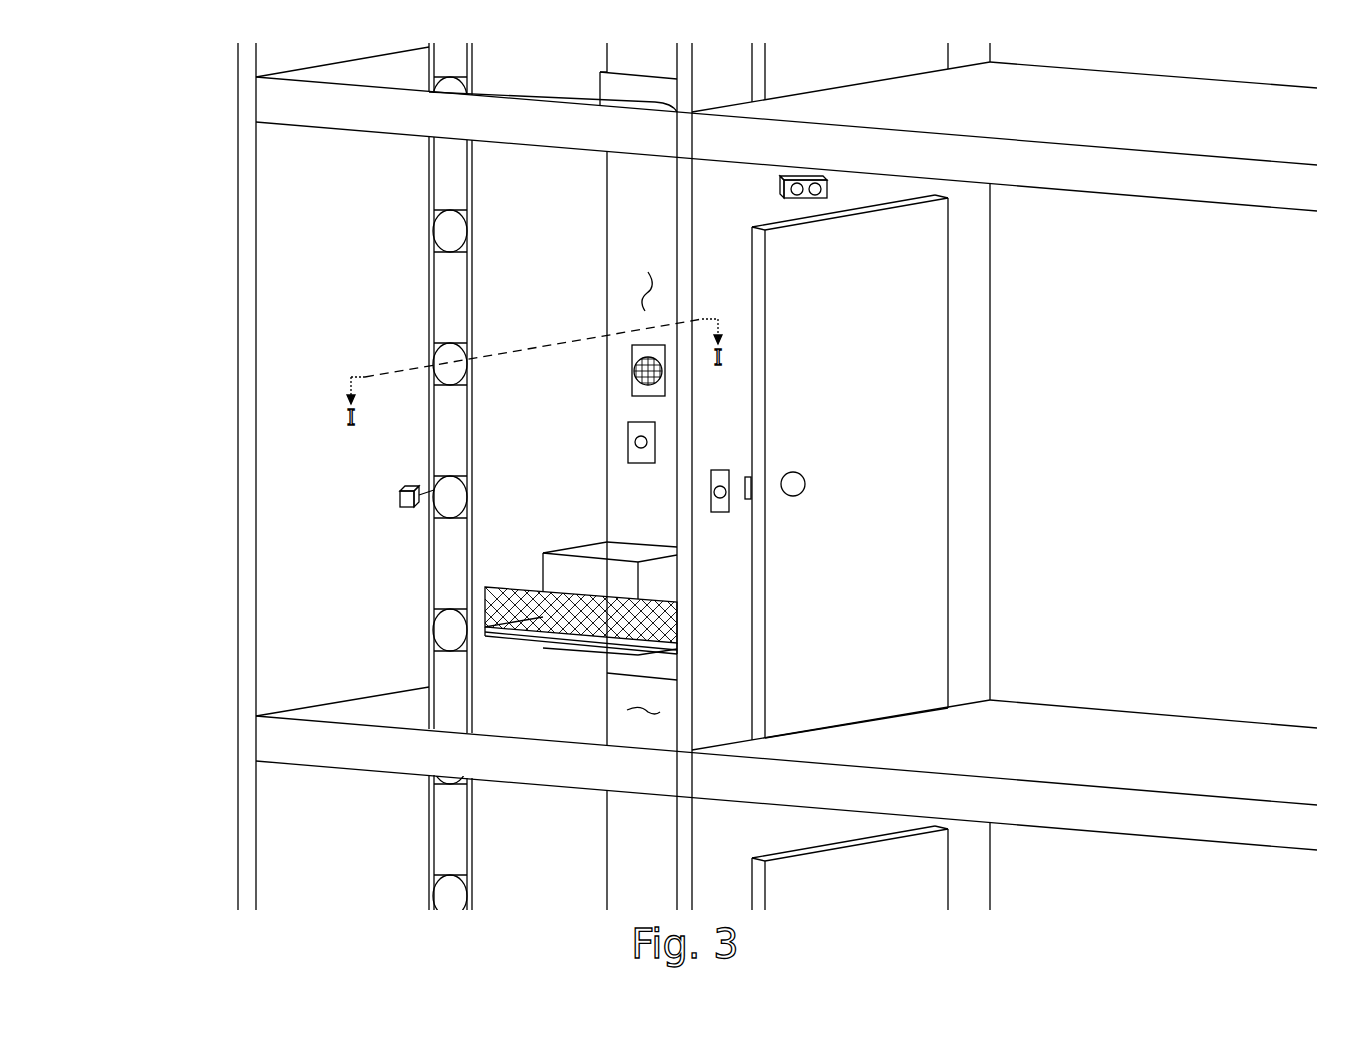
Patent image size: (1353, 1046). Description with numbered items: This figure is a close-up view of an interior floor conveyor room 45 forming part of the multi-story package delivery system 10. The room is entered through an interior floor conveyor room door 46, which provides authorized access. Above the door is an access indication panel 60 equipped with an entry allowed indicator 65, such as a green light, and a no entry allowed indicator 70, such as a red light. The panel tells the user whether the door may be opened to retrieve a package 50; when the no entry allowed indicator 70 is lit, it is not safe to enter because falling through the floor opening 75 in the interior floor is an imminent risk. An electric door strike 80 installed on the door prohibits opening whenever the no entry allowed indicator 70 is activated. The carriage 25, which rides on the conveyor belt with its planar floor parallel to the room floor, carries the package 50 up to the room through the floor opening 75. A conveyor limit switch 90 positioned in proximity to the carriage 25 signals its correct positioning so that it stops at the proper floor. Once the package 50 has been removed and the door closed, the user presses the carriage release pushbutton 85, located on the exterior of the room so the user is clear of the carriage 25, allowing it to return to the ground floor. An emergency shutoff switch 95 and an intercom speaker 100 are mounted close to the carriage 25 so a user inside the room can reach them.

The multi-story package delivery system 10 is at (160, 211).
The carriage 25 is at (585, 622).
The interior floor conveyor room 45 is at (645, 293).
The interior floor conveyor room door 46 is at (905, 485).
The package 50 is at (577, 570).
The access indication panel 60 is at (765, 228).
The entry allowed indicator 65 is at (798, 196).
The no entry allowed indicator 70 is at (818, 195).
The floor opening 75 is at (641, 712).
The electric door strike 80 is at (746, 500).
The carriage release pushbutton 85 is at (738, 466).
The conveyor limit switch 90 is at (400, 505).
The emergency shutoff switch 95 is at (647, 452).
The intercom speaker 100 is at (637, 369).